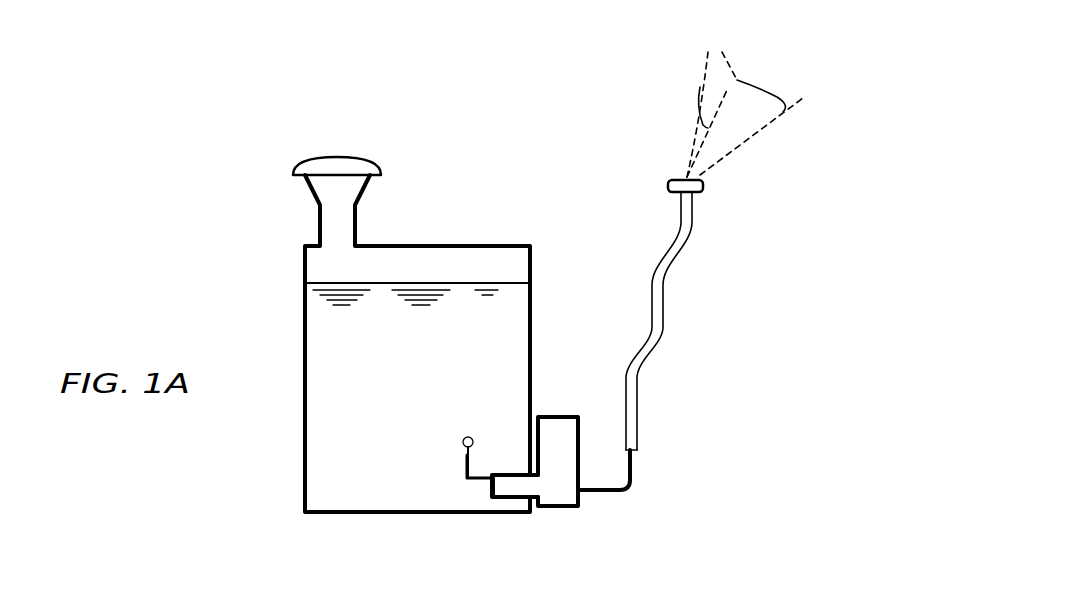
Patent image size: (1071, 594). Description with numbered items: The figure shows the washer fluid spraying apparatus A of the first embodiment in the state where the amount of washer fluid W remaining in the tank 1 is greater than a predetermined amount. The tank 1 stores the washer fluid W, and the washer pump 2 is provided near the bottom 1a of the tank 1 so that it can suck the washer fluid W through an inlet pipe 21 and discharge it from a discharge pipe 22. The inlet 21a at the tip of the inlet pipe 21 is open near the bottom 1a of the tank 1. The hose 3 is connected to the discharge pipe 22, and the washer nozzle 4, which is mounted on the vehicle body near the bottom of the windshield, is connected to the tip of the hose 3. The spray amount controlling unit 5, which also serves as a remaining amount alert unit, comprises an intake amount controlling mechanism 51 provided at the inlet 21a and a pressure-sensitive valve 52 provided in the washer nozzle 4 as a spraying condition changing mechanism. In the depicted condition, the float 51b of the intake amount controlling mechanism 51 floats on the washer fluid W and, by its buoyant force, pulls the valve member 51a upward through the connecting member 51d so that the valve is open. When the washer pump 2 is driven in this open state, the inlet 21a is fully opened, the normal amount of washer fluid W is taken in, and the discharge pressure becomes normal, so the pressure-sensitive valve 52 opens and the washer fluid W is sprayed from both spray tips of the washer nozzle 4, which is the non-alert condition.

The washer fluid spraying apparatus A is at (480, 132).
The tank 1 is at (303, 401).
The bottom of the tank 1a is at (363, 512).
The washer fluid W is at (396, 283).
The washer pump 2 is at (562, 416).
The hose 3 is at (637, 423).
The washer nozzle 4 is at (677, 180).
The spray amount controlling unit 5 is at (624, 143).
The intake amount controlling mechanism 51 is at (383, 354).
The valve member 51a is at (483, 470).
The float 51b is at (462, 438).
The valve lever 51d is at (467, 463).
The pressure-sensitive valve 52 is at (668, 190).
The inlet pipe 21 is at (513, 500).
The inlet 21a is at (500, 488).
The discharge pipe 22 is at (633, 470).